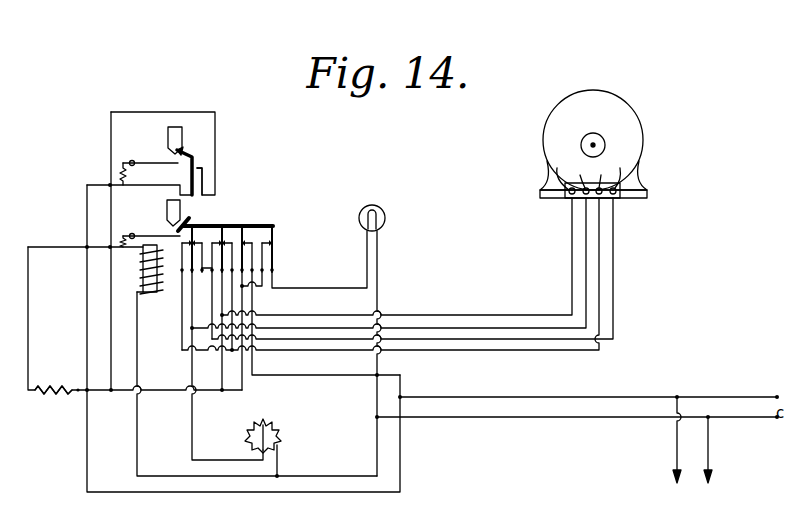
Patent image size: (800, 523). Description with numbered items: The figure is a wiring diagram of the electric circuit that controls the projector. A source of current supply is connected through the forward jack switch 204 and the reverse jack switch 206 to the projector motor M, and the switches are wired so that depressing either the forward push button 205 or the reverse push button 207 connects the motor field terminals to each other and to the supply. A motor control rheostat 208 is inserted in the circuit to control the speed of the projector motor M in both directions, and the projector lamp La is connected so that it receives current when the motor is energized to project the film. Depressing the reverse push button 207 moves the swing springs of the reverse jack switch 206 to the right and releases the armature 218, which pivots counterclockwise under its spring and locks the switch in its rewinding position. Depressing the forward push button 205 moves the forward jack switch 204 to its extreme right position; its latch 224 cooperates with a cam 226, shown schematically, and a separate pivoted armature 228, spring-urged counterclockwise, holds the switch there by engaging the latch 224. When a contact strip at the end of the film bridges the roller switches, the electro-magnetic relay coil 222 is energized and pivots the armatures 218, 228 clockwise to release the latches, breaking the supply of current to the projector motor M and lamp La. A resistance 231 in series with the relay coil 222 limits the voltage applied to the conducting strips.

The cam 226 is at (166, 130).
The forward push button 205 is at (180, 141).
The latch 224 is at (189, 151).
The forward jack switch 204 is at (199, 158).
The armature 228 is at (143, 162).
The reverse push button 207 is at (182, 214).
The armature 218 is at (143, 234).
The reverse jack switch 206 is at (273, 224).
The electro-magnetic relay coil 222 is at (142, 266).
The resistance 231 is at (53, 399).
The motor control rheostat 208 is at (281, 436).
The projector lamp La is at (377, 216).
The projector motor M is at (593, 144).